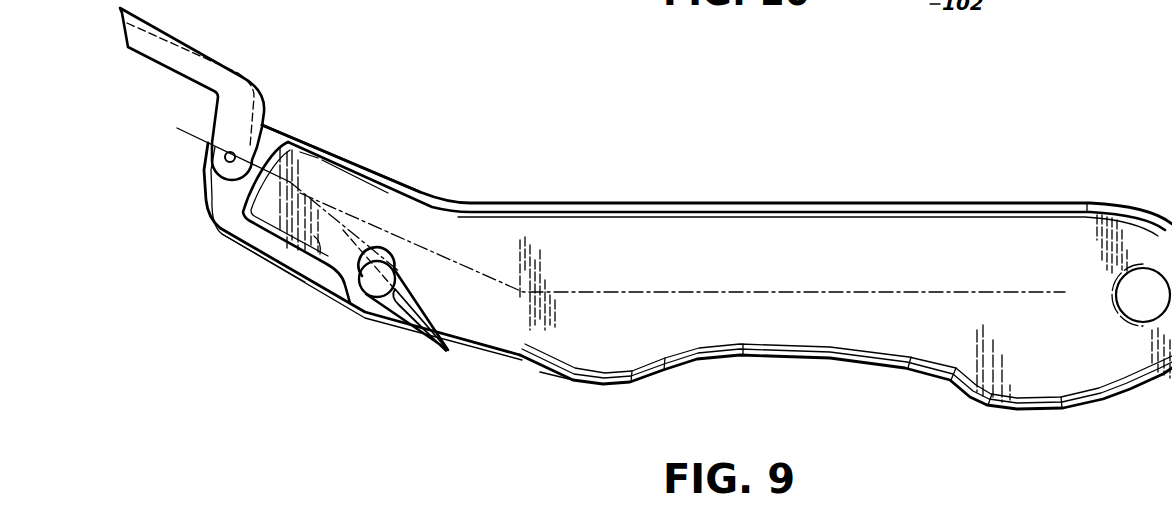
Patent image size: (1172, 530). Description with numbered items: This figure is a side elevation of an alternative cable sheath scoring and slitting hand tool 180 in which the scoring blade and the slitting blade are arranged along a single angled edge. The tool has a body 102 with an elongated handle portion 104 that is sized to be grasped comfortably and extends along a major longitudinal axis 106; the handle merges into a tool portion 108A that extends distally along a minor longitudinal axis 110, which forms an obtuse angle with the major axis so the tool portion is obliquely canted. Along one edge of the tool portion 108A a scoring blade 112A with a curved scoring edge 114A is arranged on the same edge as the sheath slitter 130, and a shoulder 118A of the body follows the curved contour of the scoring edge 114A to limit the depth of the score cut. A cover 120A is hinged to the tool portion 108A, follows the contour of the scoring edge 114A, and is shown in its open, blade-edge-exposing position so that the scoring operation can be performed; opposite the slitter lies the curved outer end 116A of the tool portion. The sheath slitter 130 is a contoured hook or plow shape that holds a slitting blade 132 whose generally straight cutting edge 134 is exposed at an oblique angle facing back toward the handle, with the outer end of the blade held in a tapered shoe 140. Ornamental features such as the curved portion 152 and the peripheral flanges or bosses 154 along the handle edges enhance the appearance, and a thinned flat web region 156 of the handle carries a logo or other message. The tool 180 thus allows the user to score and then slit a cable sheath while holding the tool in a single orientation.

The body 102 is at (840, 382).
The handle portion 104 is at (792, 240).
The major longitudinal axis 106 is at (568, 292).
The tool portion 108A is at (317, 123).
The minor longitudinal axis 110 is at (177, 128).
The scoring blade 112A is at (320, 240).
The scoring edge 114A is at (233, 243).
The guard portion 116A is at (188, 205).
The shoulder 118A is at (265, 253).
The cover 120A is at (190, 43).
The sheath slitter 130 is at (396, 366).
The slitting blade 132 is at (393, 327).
The cutting edge 134 is at (473, 342).
The shoe 140 is at (430, 353).
The curved portion 152 is at (627, 386).
The peripheral flanges or bosses 154 is at (683, 204).
The region 156 is at (884, 242).
The cable sheath scoring and slitting hand tool 180 is at (563, 157).